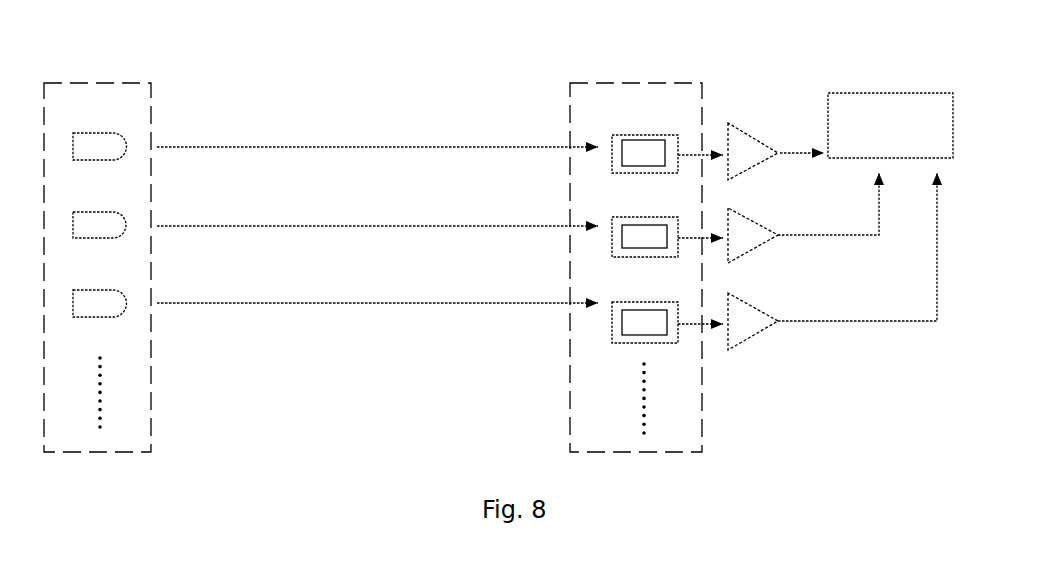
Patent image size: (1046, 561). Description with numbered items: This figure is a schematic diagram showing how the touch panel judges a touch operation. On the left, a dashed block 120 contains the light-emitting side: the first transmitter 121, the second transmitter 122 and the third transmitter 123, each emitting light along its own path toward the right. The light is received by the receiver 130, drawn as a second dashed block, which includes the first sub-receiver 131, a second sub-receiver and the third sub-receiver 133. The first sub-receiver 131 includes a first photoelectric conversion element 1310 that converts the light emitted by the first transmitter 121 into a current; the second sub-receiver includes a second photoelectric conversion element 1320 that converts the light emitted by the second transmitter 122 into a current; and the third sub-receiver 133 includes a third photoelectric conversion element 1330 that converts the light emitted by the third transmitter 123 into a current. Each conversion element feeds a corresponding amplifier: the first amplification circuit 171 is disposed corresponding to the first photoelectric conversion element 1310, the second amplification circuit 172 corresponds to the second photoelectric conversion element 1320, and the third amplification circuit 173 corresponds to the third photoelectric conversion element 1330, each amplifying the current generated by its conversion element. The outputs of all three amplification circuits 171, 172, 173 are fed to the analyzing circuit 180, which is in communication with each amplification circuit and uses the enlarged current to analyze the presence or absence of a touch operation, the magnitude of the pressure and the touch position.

The light source array 120 is at (127, 240).
The first transmitter 121 is at (157, 130).
The second transmitter 122 is at (157, 211).
The third transmitter 123 is at (157, 290).
The receiver 130 is at (647, 240).
The first photoelectric conversion element 1310 is at (574, 129).
The second photoelectric conversion element 1320 is at (574, 215).
The third photoelectric conversion element 1330 is at (571, 298).
The first sub-receiver 131 is at (572, 185).
The third sub-receiver 133 is at (572, 312).
The first amplification circuit 171 is at (792, 116).
The second amplification circuit 172 is at (803, 243).
The third amplification circuit 173 is at (832, 309).
The analyzing circuit 180 is at (895, 93).